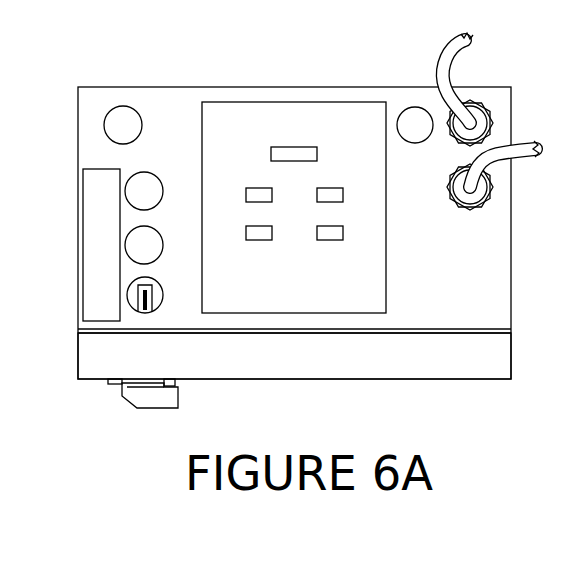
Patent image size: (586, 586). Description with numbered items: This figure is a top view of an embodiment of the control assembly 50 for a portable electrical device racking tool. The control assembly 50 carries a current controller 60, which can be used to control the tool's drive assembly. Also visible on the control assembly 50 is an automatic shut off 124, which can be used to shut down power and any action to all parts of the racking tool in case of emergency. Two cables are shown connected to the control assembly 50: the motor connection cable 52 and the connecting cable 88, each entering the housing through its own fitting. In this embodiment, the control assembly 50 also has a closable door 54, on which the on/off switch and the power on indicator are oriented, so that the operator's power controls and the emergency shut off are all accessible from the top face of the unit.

The control assembly 50 is at (289, 208).
The motor connection cable 52 is at (440, 89).
The closable door 54 is at (299, 384).
The current controller 60 is at (280, 176).
The connecting cable 88 is at (509, 154).
The automatic shut off 124 is at (128, 292).